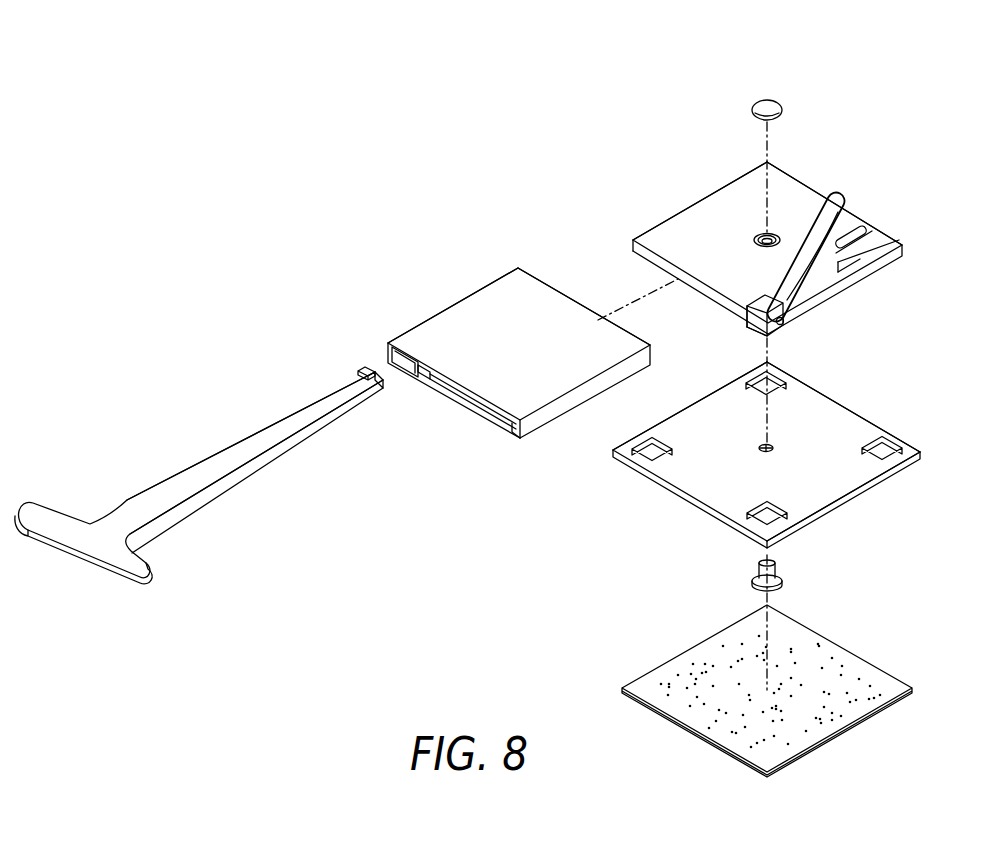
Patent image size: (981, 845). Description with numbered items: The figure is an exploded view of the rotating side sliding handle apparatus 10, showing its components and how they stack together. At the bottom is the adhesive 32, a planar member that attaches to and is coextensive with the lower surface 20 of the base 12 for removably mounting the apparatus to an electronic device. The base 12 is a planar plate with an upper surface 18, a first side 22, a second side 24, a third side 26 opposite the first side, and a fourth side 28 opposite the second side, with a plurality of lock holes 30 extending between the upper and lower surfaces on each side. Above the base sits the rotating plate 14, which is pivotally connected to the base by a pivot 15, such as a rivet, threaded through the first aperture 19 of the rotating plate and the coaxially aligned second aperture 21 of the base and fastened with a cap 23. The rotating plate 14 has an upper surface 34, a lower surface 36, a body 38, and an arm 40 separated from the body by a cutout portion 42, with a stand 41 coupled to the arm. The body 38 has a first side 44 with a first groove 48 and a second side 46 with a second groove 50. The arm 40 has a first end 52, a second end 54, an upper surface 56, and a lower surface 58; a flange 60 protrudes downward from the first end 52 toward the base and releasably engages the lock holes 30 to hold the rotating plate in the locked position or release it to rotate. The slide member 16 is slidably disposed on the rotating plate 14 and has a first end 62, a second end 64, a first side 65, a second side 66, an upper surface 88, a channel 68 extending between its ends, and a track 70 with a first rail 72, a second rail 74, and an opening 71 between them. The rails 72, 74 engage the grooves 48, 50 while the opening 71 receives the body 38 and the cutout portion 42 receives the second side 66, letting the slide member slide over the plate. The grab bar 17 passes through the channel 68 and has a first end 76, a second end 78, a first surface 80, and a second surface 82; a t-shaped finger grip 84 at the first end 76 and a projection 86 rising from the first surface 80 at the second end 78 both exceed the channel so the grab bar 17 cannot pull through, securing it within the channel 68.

The rotating side sliding handle apparatus 10 is at (355, 108).
The base 12 is at (889, 396).
The rotating plate 14 is at (872, 182).
The pivot 15 is at (785, 587).
The slide member 16 is at (431, 252).
The grab bar 17 is at (203, 396).
The upper surface 18 is at (822, 390).
The first aperture 19 is at (758, 227).
The lower surface 20 is at (848, 507).
The second aperture 21 is at (760, 455).
The first side 22 is at (693, 505).
The cap 23 is at (757, 100).
The second side 24 is at (703, 397).
The third side 26 is at (848, 402).
The fourth side 28 is at (872, 487).
The lock holes 30 is at (885, 443).
The adhesive 32 is at (840, 737).
The upper surface 34 is at (797, 185).
The lower surface 36 is at (698, 295).
The body 38 is at (705, 197).
The arm 40 is at (862, 263).
The stand 41 is at (843, 192).
The cutout portion 42 is at (857, 223).
The first side 44 is at (660, 222).
The second side 46 is at (742, 318).
The first groove 48 is at (633, 252).
The second groove 50 is at (742, 293).
The first end 52 is at (775, 328).
The second end 54 is at (890, 238).
The upper surface 56 is at (875, 247).
The lower surface 58 is at (840, 282).
The flange 60 is at (765, 320).
The first end 62 is at (472, 408).
The second end 64 is at (578, 305).
The first side 65 is at (478, 292).
The second side 66 is at (577, 397).
The channel 68 is at (402, 372).
The track 70 is at (428, 447).
The opening 71 is at (467, 397).
The first rail 72 is at (427, 373).
The second rail 74 is at (513, 425).
The first end 76 is at (127, 497).
The second end 78 is at (335, 378).
The first surface 80 is at (310, 410).
The second surface 82 is at (245, 467).
The finger grip 84 is at (85, 540).
The projection 86 is at (363, 368).
The upper surface 88 is at (505, 312).